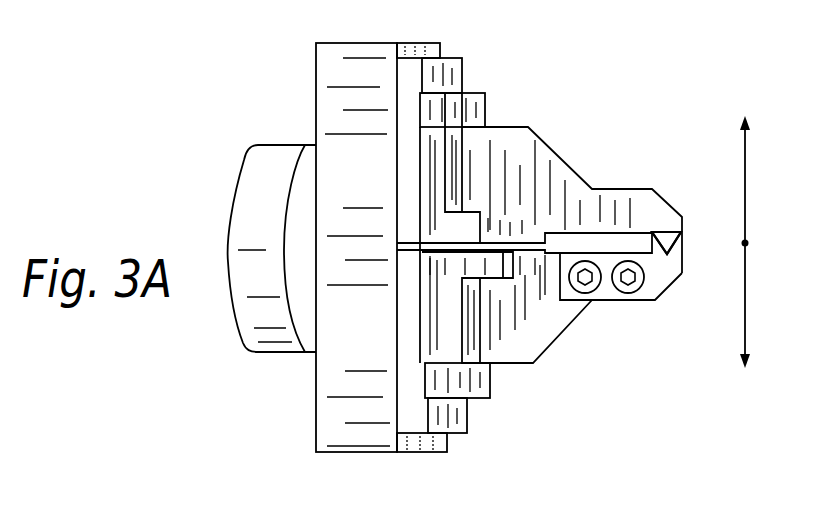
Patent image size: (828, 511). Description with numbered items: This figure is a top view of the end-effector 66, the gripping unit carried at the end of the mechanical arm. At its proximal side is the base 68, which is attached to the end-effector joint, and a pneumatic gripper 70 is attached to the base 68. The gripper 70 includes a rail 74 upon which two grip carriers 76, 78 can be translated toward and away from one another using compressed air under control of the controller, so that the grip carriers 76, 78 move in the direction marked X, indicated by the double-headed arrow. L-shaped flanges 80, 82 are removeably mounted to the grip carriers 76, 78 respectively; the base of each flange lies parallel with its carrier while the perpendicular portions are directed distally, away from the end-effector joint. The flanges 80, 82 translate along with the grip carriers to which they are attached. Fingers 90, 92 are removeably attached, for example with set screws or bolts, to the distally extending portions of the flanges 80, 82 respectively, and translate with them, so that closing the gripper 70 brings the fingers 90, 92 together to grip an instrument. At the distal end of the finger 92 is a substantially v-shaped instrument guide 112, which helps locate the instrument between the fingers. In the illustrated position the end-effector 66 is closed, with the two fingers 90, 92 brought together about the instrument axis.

The end-effector 66 is at (226, 98).
The base 68 is at (268, 315).
The pneumatic gripper 70 is at (347, 43).
The rail 74 is at (418, 43).
The grip carrier 76 is at (462, 61).
The grip carrier 78 is at (458, 447).
The L-shaped flange 80 is at (488, 101).
The L-shaped flange 82 is at (490, 379).
The finger 90 is at (570, 161).
The finger 92 is at (570, 328).
The instrument guide 112 is at (673, 283).
The direction X is at (748, 243).